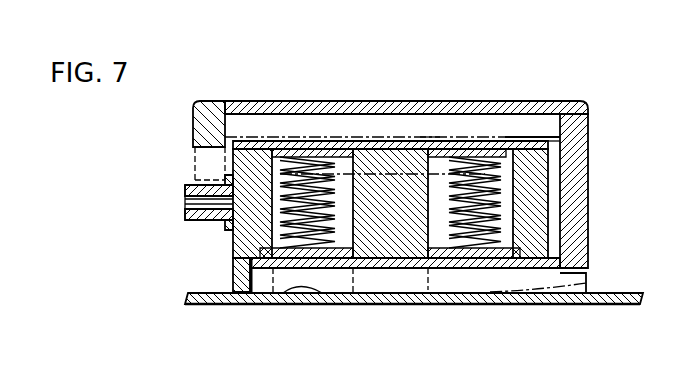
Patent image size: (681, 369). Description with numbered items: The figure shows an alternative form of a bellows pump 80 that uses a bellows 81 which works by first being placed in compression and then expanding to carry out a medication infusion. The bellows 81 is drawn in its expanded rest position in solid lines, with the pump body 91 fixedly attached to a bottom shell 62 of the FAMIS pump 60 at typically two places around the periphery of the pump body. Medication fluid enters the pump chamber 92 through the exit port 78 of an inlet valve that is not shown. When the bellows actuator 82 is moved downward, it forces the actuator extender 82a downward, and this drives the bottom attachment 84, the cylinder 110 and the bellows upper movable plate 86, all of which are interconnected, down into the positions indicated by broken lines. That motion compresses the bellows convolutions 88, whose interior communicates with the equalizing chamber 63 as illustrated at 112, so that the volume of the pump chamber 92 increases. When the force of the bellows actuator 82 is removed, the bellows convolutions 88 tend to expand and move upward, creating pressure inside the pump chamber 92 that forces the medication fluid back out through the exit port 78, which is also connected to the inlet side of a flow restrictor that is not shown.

The FAMIS pump 60 is at (379, 98).
The bellows pump 80 is at (484, 94).
The bellows actuator 82 is at (247, 133).
The actuator extender 82a is at (588, 184).
The equalizing chamber 63 is at (563, 87).
The bellows upper movable plate 86 is at (365, 146).
The bellows 81 is at (407, 140).
The pump body 91 is at (428, 141).
The pump chamber 92 is at (530, 139).
The bottom attachment 84 is at (567, 273).
The exit port 78 is at (188, 198).
The bellows convolutions 88 is at (238, 232).
The communication passage 112 is at (250, 274).
The cylinder 110 is at (441, 252).
The bottom shell 62 is at (323, 294).